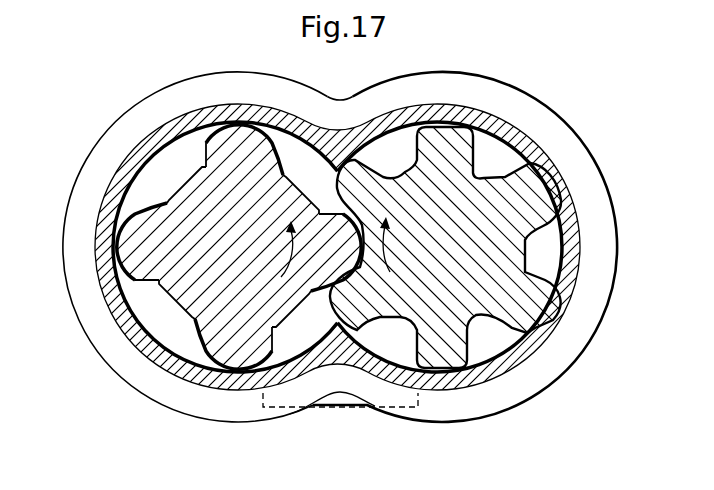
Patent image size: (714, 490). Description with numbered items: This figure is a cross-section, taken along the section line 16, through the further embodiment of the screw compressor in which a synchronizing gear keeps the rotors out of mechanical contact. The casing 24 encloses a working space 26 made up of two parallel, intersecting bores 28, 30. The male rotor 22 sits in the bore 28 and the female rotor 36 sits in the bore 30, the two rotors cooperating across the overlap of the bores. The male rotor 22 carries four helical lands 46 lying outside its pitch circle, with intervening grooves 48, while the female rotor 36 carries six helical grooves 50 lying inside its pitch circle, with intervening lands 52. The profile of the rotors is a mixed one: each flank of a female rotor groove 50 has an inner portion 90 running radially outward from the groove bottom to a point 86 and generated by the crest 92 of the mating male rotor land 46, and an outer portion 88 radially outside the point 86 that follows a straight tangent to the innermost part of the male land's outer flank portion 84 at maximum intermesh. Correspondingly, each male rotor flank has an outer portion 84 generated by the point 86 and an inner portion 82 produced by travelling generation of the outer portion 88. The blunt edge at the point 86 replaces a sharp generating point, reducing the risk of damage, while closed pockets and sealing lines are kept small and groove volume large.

The section line 16 is at (237, 247).
The male rotor 22 is at (143, 258).
The casing 24 is at (488, 112).
The working space 26 is at (505, 157).
The bore 28 is at (167, 172).
The bore 30 is at (553, 243).
The female rotor 36 is at (512, 258).
The helical land 46 is at (150, 213).
The groove 48 is at (153, 308).
The helical groove 50 is at (507, 337).
The land 52 is at (533, 300).
The inner portion of male rotor flank 82 is at (283, 177).
The outer portion of male rotor flank 84 is at (398, 178).
The point 86 is at (368, 190).
The outer portion of female rotor flank 88 is at (363, 340).
The inner portion of female rotor flank 90 is at (400, 323).
The crest 92 is at (250, 367).